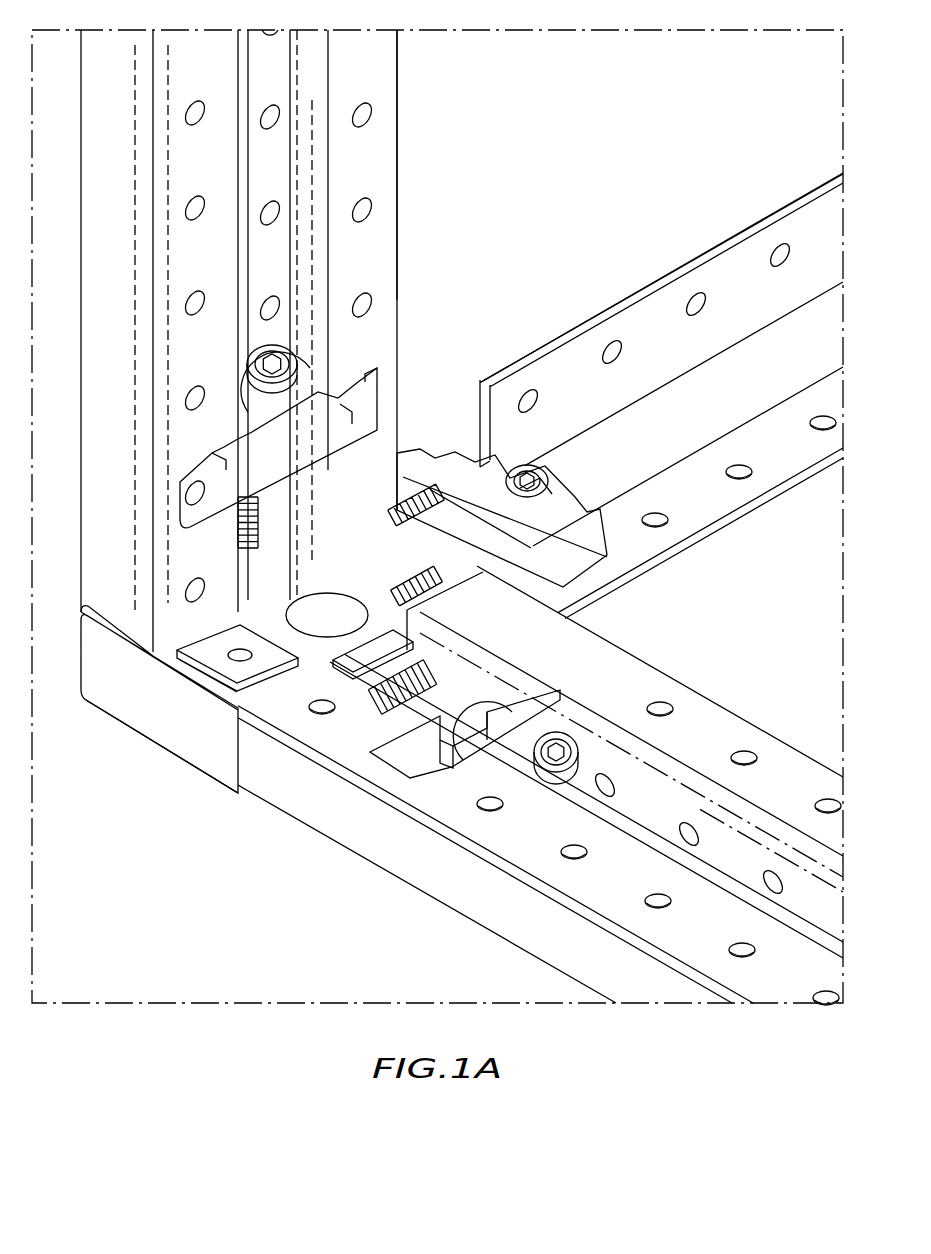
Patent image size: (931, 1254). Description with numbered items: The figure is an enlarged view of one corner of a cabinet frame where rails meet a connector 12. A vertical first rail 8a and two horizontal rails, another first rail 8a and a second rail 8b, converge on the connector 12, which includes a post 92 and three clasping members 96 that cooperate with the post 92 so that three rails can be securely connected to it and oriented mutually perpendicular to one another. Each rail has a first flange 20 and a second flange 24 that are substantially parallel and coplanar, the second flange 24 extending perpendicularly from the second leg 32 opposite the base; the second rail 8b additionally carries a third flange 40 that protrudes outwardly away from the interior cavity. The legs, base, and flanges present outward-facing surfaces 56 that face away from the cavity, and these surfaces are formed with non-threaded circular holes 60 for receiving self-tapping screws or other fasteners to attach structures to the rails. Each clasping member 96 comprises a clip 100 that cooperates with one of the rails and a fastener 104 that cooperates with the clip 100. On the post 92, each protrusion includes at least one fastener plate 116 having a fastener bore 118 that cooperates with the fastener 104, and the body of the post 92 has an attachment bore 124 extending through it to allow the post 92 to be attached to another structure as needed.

The first rail 8a is at (403, 110).
The second rail 8b is at (615, 303).
The connector 12 is at (128, 736).
The first flange 20 is at (398, 203).
The second flange 24 is at (460, 432).
The second leg 32 is at (95, 405).
The third flange 40 is at (719, 246).
The outward-facing surface 56 is at (376, 356).
The circular holes 60 is at (735, 754).
The post 92 is at (192, 774).
The clasping member 96 is at (292, 358).
The clip 100 is at (374, 421).
The fastener 104 is at (245, 376).
The fastener plate 116 is at (190, 668).
The fastener bore 118 is at (243, 652).
The attachment bore 124 is at (322, 598).